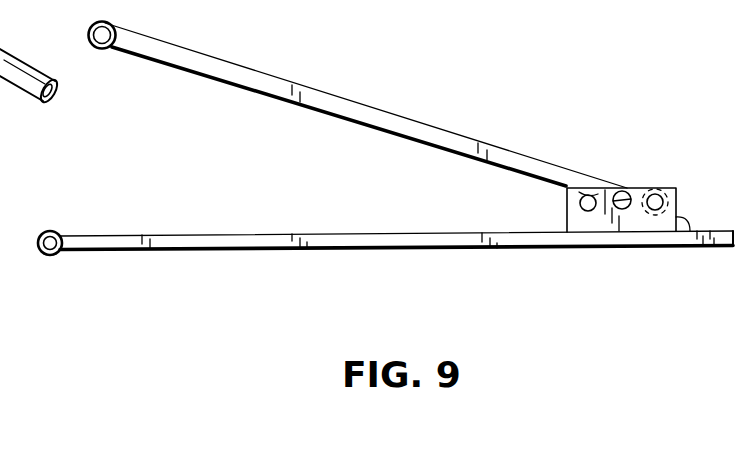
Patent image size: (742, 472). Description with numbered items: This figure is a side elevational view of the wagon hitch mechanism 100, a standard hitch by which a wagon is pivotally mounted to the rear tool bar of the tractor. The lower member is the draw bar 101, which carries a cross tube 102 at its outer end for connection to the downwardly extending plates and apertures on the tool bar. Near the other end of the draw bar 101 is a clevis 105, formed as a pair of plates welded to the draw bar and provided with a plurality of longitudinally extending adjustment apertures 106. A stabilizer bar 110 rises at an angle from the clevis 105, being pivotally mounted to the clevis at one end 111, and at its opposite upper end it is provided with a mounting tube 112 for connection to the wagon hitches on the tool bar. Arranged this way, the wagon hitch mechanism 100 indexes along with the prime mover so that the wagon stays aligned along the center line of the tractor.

The wagon hitch mechanism 100 is at (523, 78).
The draw bar 101 is at (254, 250).
The cross tube 102 is at (48, 255).
The clevis 105 is at (688, 232).
The adjustment apertures 106 is at (592, 208).
The stabilizer bar 110 is at (388, 132).
The end of stabilizer bar 111 is at (653, 229).
The mounting tube 112 is at (98, 49).